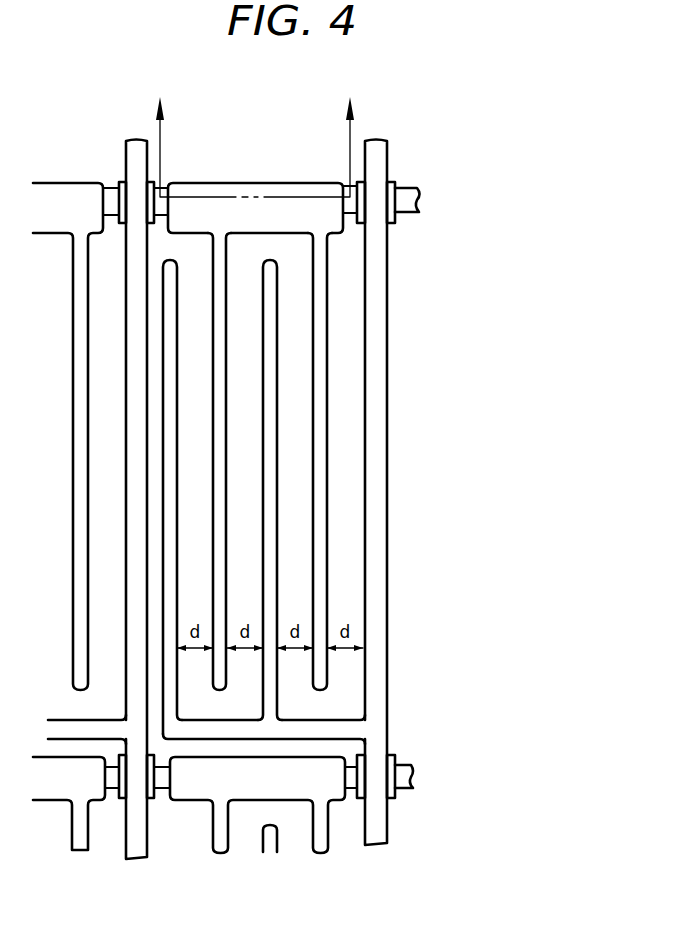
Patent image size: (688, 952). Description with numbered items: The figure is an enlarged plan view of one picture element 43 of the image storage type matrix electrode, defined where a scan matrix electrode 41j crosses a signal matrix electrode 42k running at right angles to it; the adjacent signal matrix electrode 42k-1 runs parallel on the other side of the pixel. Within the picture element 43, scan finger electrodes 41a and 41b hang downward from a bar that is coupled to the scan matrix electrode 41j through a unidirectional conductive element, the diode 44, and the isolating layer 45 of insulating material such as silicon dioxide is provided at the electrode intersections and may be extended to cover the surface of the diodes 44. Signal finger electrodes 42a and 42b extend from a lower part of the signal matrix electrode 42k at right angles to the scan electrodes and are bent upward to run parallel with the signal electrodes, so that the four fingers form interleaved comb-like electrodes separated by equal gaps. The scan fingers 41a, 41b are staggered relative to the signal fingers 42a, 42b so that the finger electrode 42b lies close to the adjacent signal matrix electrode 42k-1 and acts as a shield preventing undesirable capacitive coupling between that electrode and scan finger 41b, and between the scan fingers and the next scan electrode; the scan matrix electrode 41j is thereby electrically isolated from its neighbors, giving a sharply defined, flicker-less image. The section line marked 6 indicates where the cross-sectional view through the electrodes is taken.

The second polarizer 6 is at (255, 135).
The diode 44 is at (270, 182).
The isolating layer 45 is at (396, 181).
The scan finger electrode 41a is at (328, 295).
The scan finger electrode 41b is at (227, 346).
The signal finger electrode 42a is at (278, 450).
The signal finger electrode 42b is at (163, 525).
The picture element 43 is at (233, 407).
The signal matrix electrode 42k is at (375, 847).
The adjacent signal matrix electrode 42k-1 is at (137, 859).
The scan matrix electrode 41j is at (422, 197).